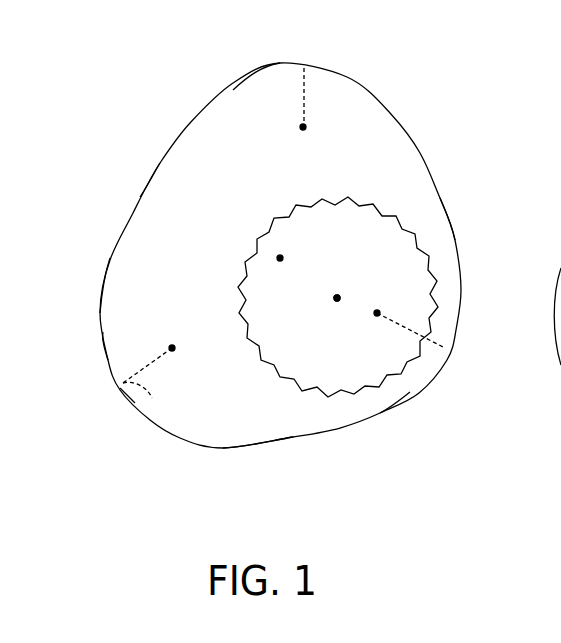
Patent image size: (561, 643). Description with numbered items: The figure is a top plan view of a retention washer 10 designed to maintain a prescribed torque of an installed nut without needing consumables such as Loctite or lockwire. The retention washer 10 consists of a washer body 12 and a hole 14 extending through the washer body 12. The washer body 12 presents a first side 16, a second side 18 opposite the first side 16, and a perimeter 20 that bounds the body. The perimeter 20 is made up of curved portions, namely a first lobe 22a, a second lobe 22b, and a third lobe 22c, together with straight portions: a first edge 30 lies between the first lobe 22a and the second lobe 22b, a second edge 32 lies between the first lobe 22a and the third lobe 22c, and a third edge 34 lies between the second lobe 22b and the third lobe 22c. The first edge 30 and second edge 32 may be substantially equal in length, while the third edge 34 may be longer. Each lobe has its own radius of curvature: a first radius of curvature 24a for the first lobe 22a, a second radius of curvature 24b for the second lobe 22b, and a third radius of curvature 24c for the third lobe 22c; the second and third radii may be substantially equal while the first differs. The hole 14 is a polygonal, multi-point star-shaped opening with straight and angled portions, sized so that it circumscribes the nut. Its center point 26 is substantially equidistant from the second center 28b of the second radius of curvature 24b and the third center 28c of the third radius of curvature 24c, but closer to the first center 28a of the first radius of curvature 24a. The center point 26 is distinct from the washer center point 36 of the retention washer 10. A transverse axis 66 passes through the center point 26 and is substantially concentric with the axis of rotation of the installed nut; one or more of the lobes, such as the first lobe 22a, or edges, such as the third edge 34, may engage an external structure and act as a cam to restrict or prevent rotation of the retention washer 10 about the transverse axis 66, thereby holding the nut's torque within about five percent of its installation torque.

The retention washer 10 is at (459, 90).
The washer body 12 is at (164, 457).
The hole 14 is at (357, 394).
The first side 16 is at (219, 231).
The second side 18 is at (122, 395).
The perimeter 20 is at (110, 258).
The first lobe 22a is at (411, 392).
The second lobe 22b is at (103, 332).
The third lobe 22c is at (235, 90).
The first radius of curvature 24a is at (418, 326).
The second radius of curvature 24b is at (138, 372).
The third radius of curvature 24c is at (305, 98).
The center point 26 is at (364, 272).
The transverse axis 66 is at (337, 298).
The first center 28a is at (374, 314).
The second center 28b is at (175, 348).
The third center 28c is at (306, 128).
The first edge 30 is at (295, 438).
The second edge 32 is at (440, 198).
The third edge 34 is at (140, 197).
The washer center point 36 is at (278, 260).